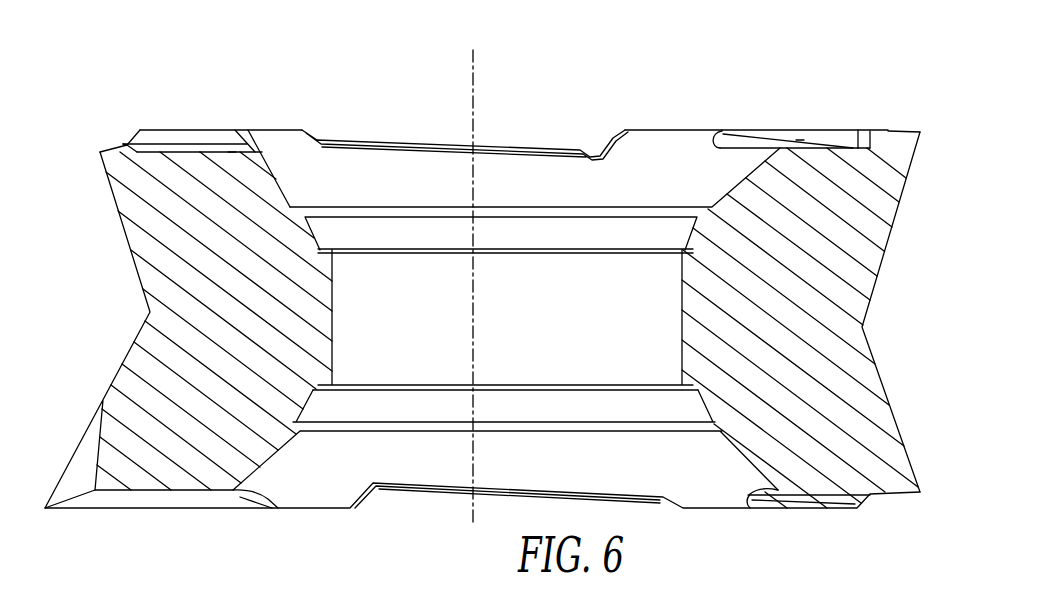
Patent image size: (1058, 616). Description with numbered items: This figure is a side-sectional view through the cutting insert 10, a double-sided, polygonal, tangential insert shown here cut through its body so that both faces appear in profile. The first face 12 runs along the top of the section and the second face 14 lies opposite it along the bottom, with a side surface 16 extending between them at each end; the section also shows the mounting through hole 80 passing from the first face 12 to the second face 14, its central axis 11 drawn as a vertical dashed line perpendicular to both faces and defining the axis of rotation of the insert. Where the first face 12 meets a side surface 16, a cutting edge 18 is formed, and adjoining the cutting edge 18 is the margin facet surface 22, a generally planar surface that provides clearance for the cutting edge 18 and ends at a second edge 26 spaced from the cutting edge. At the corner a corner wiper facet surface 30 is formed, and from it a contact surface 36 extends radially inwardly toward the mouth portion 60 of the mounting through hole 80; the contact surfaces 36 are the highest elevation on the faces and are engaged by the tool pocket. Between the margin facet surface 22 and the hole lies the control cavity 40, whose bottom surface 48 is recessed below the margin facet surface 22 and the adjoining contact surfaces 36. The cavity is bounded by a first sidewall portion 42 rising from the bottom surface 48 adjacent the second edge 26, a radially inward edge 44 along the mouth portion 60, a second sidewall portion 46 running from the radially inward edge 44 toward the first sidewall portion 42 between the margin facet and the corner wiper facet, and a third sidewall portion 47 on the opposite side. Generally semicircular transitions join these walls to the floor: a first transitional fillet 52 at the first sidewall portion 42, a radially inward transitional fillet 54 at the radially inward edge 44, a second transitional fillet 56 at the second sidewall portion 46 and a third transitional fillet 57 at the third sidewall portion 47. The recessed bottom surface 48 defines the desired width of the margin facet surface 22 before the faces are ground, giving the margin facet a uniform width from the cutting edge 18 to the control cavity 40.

The cutting insert 10 is at (108, 86).
The central axis 11 is at (476, 95).
The first face 12 is at (308, 116).
The second face 14 is at (288, 525).
The side surface 16 is at (884, 401).
The cutting edge 18 is at (97, 153).
The margin facet surface 22 is at (113, 147).
The second edge 26 is at (887, 132).
The corner wiper facet surface 30 is at (132, 138).
The contact surface 36 is at (208, 130).
The control cavity 40 is at (242, 170).
The first sidewall portion 42 is at (163, 148).
The radially inward edge 44 is at (252, 152).
The second sidewall portion 46 is at (139, 130).
The third sidewall portion 47 is at (748, 130).
The bottom surface 48 is at (200, 148).
The first transitional fillet 52 is at (168, 153).
The radially inward transitional fillet 54 is at (258, 148).
The second transitional fillet 56 is at (156, 143).
The third transitional fillet 57 is at (817, 135).
The mouth portion 60 is at (633, 150).
The mounting through hole 80 is at (682, 305).